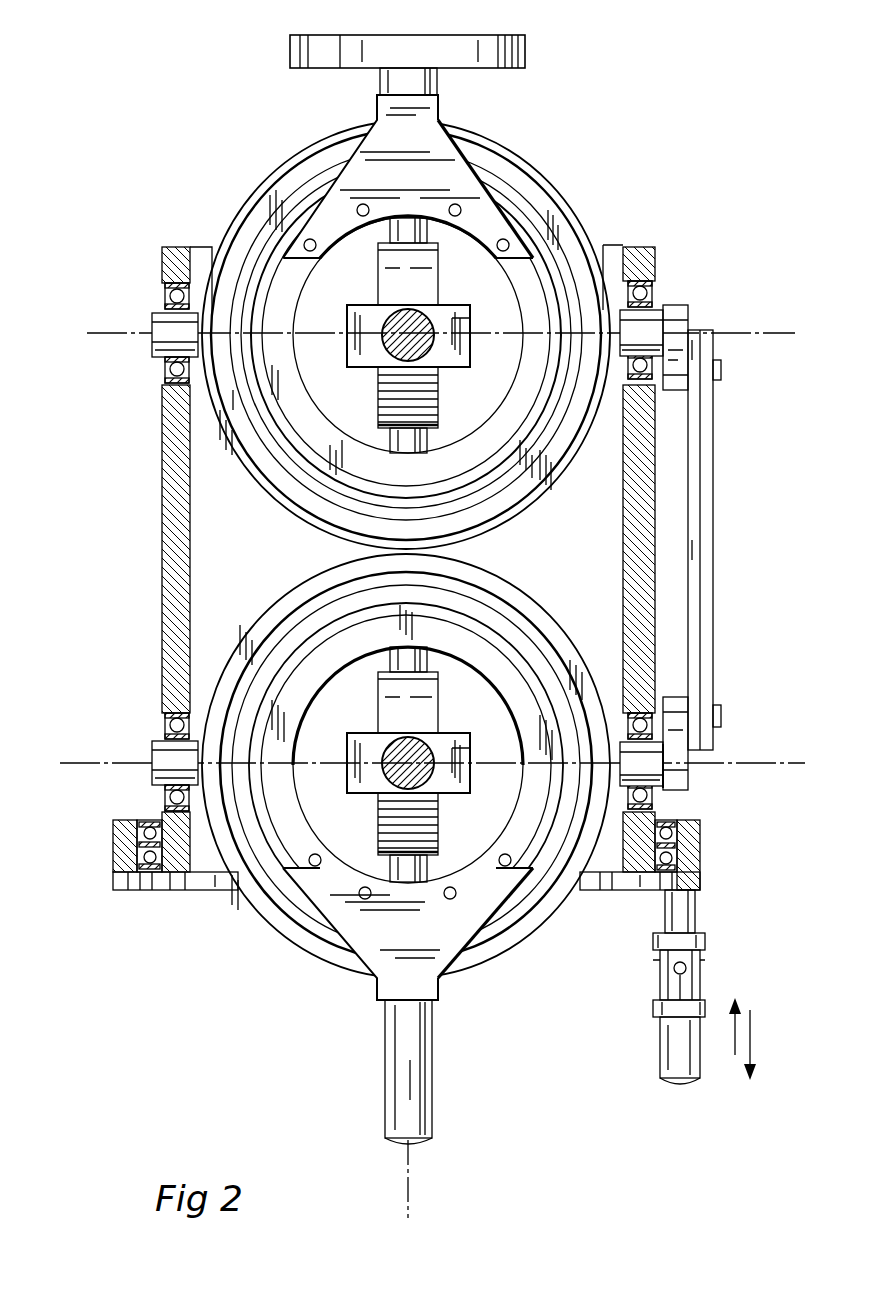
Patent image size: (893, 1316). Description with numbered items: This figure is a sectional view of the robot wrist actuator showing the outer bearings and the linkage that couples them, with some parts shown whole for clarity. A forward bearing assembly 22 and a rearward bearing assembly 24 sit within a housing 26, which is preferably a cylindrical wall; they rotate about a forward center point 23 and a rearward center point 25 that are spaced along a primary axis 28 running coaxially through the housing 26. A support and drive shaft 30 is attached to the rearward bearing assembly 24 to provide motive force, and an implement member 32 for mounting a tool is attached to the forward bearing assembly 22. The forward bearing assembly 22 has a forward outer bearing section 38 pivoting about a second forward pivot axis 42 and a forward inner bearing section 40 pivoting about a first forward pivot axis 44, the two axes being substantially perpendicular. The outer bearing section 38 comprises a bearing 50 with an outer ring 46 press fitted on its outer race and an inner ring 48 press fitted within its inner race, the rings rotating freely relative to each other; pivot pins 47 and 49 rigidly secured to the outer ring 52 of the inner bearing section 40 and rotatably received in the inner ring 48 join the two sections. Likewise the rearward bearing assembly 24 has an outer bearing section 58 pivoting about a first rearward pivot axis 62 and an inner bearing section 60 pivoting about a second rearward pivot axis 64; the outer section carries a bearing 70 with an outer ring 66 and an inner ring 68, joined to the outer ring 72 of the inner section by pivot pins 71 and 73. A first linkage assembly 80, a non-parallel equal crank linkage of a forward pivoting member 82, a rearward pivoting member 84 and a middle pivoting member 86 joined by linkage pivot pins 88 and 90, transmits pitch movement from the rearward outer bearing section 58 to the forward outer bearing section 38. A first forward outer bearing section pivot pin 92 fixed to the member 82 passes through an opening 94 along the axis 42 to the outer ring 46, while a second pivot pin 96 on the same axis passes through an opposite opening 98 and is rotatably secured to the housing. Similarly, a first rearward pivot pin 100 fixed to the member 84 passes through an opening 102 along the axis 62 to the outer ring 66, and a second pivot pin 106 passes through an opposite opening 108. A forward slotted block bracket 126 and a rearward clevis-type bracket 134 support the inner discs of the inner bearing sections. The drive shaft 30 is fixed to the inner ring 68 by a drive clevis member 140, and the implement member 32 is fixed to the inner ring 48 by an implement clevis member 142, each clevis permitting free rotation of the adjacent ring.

The forward bearing assembly 22 is at (425, 274).
The forward center point 23 is at (395, 356).
The rearward bearing assembly 24 is at (423, 819).
The rearward center point 25 is at (395, 778).
The housing 26 is at (175, 446).
The primary axis 28 is at (412, 1170).
The support and drive shaft 30 is at (405, 1083).
The implement member 32 is at (490, 46).
The forward outer bearing section 38 is at (431, 333).
The forward inner bearing section 40 is at (412, 335).
The second forward pivot axis 42 is at (86, 332).
The first forward pivot axis 44 is at (433, 346).
The outer ring 46 is at (528, 174).
The pivot pin 47 is at (395, 230).
The inner ring 48 is at (527, 287).
The pivot pin 49 is at (396, 437).
The bearing 50 is at (497, 187).
The outer ring 52 is at (426, 277).
The rearward outer bearing section 58 is at (656, 987).
The rearward inner bearing section 60 is at (415, 764).
The first rearward pivot axis 62 is at (80, 762).
The second rearward pivot axis 64 is at (434, 779).
The outer ring 66 is at (302, 600).
The inner ring 68 is at (528, 712).
The bearing 70 is at (505, 606).
The pivot pin 71 is at (395, 658).
The outer ring 72 is at (430, 694).
The pivot pin 73 is at (428, 864).
The first linkage assembly 80 is at (734, 550).
The forward pivoting member 82 is at (668, 330).
The rearward pivoting member 84 is at (655, 767).
The middle pivoting member 86 is at (738, 540).
The linkage pivot pin 88 is at (722, 372).
The linkage pivot pin 90 is at (724, 722).
The first forward outer bearing section pivot pin 92 is at (674, 320).
The opening 94 is at (640, 320).
The second forward outer bearing section pivot pin 96 is at (160, 330).
The opening 98 is at (162, 350).
The first rearward outer bearing section pivot pin 100 is at (665, 775).
The opening 102 is at (662, 783).
The second rearward outer bearing section pivot pin 106 is at (165, 770).
The opening 108 is at (162, 736).
The forward slotted block bracket 126 is at (462, 320).
The rearward clevis-type bracket 134 is at (456, 776).
The drive clevis member 140 is at (447, 958).
The implement clevis member 142 is at (432, 128).